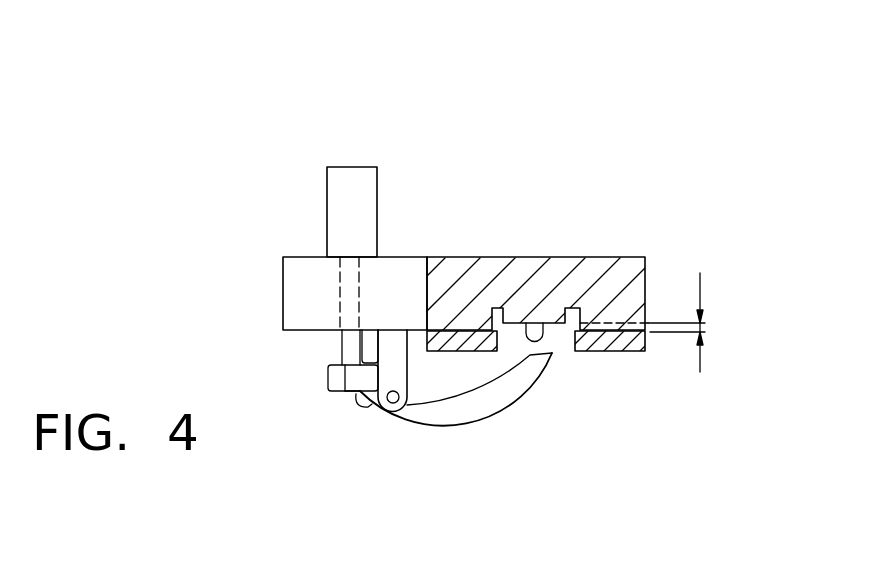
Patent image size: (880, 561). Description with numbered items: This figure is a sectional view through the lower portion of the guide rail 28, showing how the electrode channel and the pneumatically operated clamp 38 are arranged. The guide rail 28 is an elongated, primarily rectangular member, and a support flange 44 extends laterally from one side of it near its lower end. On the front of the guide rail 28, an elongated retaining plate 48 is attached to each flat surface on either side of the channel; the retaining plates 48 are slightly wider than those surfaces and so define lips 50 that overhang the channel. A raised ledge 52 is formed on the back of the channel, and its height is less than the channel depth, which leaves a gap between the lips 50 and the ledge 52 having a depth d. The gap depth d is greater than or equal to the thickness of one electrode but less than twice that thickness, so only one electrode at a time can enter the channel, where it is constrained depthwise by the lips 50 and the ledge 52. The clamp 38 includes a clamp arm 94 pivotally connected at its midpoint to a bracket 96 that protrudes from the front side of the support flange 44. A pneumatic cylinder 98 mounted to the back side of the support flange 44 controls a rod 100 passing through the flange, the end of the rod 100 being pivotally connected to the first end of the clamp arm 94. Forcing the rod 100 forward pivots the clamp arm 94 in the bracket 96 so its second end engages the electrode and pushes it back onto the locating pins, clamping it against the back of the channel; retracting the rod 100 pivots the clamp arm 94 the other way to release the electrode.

The guide rail 28 is at (570, 258).
The pneumatically operated clamp 38 is at (350, 417).
The support flange 44 is at (394, 270).
The retaining plate 48 is at (620, 352).
The lips 50 is at (500, 352).
The raised ledge 52 is at (528, 322).
The clamp arm 94 is at (435, 418).
The bracket 96 is at (412, 425).
The pneumatic cylinder 98 is at (345, 208).
The rod 100 is at (350, 353).
The gap depth d is at (702, 292).